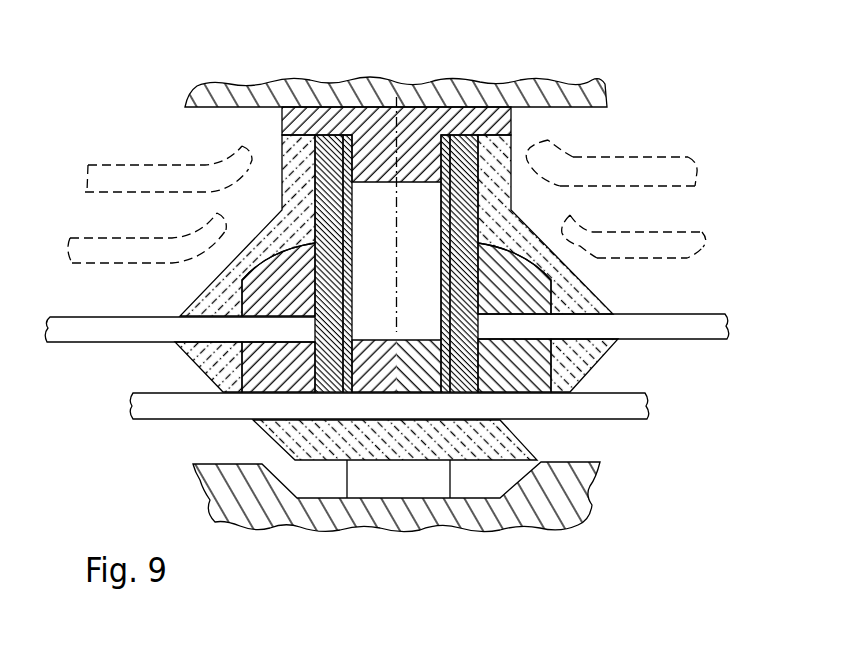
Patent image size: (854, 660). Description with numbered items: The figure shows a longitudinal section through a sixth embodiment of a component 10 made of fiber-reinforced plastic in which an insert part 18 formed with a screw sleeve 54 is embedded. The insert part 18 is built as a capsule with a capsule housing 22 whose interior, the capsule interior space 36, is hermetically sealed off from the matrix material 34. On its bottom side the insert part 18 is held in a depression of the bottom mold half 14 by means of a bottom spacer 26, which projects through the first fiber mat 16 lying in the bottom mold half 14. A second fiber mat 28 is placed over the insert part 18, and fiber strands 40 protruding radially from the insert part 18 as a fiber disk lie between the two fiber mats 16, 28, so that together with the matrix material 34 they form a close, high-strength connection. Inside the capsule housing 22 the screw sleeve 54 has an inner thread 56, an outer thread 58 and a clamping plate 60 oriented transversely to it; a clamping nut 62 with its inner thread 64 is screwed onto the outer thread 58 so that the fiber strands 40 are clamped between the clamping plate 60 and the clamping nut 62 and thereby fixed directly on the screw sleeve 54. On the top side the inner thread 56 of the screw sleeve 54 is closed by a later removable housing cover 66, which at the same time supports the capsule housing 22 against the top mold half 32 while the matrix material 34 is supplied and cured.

The component 10 is at (188, 144).
The bottom mold half 14 is at (566, 503).
The first fiber mat 16 is at (85, 263).
The insert part 18 is at (183, 313).
The capsule housing 22 is at (190, 352).
The bottom spacer 26 is at (492, 483).
The second fiber mat 28 is at (124, 168).
The top mold half 32 is at (593, 83).
The matrix material 34 is at (100, 224).
The capsule interior space 36 is at (388, 282).
The fiber strands 40 is at (75, 338).
The screw sleeve 54 is at (460, 214).
The inner thread 56 is at (442, 233).
The outer thread 58 is at (470, 150).
The clamping plate 60 is at (553, 373).
The clamping nut 62 is at (543, 298).
The inner thread 64 is at (470, 288).
The housing cover 66 is at (468, 118).